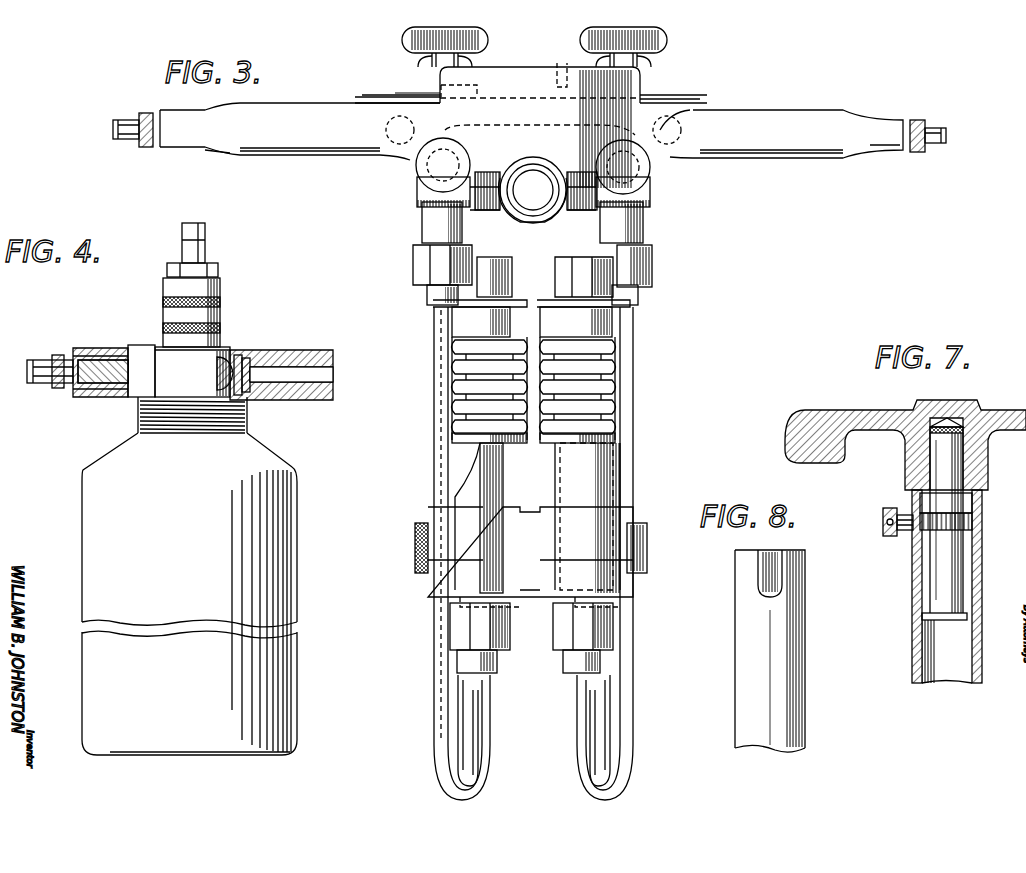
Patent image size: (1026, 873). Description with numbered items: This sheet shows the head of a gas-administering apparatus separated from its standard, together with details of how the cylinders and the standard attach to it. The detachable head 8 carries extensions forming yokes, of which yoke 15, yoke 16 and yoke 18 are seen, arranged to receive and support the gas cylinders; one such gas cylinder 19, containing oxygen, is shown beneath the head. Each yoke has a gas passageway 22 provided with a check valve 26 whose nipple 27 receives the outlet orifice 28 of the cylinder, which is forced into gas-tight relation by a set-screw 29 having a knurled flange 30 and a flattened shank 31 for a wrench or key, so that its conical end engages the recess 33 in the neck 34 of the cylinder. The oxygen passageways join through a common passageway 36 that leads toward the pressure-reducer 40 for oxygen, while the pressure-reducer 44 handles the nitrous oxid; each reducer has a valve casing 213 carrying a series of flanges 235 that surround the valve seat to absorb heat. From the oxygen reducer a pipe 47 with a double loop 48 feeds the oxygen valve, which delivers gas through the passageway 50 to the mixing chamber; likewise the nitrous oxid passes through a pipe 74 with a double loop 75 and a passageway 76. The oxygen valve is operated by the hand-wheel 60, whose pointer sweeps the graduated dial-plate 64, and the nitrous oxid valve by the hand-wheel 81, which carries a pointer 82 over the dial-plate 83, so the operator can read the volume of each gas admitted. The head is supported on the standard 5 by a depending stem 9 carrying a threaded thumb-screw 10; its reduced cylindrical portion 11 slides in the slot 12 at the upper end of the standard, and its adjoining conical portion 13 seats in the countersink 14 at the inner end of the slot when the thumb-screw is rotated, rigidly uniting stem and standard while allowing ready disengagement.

In FIG. 7, the standard 5 is at (910, 648).
In FIG. 8, the standard 5 is at (747, 659).
In FIG. 3, the head 8 is at (670, 157).
In FIG. 7, the head 8 is at (876, 428).
In FIG. 7, the depending stem 9 is at (943, 581).
In FIG. 7, the thumb-screw 10 is at (924, 534).
In FIG. 7, the reduced cylindrical portion 11 is at (946, 511).
In FIG. 7, the slot 12 is at (912, 496).
In FIG. 8, the slot 12 is at (762, 563).
In FIG. 7, the conical portion 13 is at (883, 514).
In FIG. 8, the countersink 14 is at (760, 587).
In FIG. 4, the yoke 15 is at (153, 348).
In FIG. 3, the yoke 16 is at (302, 110).
In FIG. 3, the yoke 18 is at (770, 117).
In FIG. 4, the gas cylinder 19 is at (189, 594).
In FIG. 4, the gas passageway 22 is at (320, 378).
In FIG. 4, the check valve 26 is at (248, 360).
In FIG. 4, the nipple 27 is at (237, 357).
In FIG. 4, the outlet orifice 28 is at (213, 375).
In FIG. 4, the set-screw 29 is at (103, 390).
In FIG. 3, the knurled flange 30 is at (148, 147).
In FIG. 4, the knurled flange 30 is at (57, 390).
In FIG. 3, the flattened shank 31 is at (125, 120).
In FIG. 4, the flattened shank 31 is at (36, 362).
In FIG. 4, the recess 33 is at (138, 420).
In FIG. 4, the neck 34 is at (182, 395).
In FIG. 3, the common passageway 36 is at (400, 160).
In FIG. 3, the pressure-reducer 40 is at (460, 479).
In FIG. 3, the pressure-reducer 44 is at (613, 476).
In FIG. 3, the pipe 47 is at (445, 630).
In FIG. 3, the double loop 48 is at (473, 741).
In FIG. 3, the passageway 50 is at (417, 190).
In FIG. 3, the hand-wheel 60 is at (402, 40).
In FIG. 3, the dial-plate 64 is at (394, 96).
In FIG. 3, the pipe 74 is at (613, 644).
In FIG. 3, the double loop 75 is at (593, 751).
In FIG. 3, the passageway 76 is at (660, 200).
In FIG. 3, the hand-wheel 81 is at (667, 40).
In FIG. 3, the pointer 82 is at (560, 86).
In FIG. 3, the dial-plate 83 is at (702, 95).
In FIG. 3, the valve casing 213 is at (477, 394).
In FIG. 3, the flanges 235 is at (630, 357).